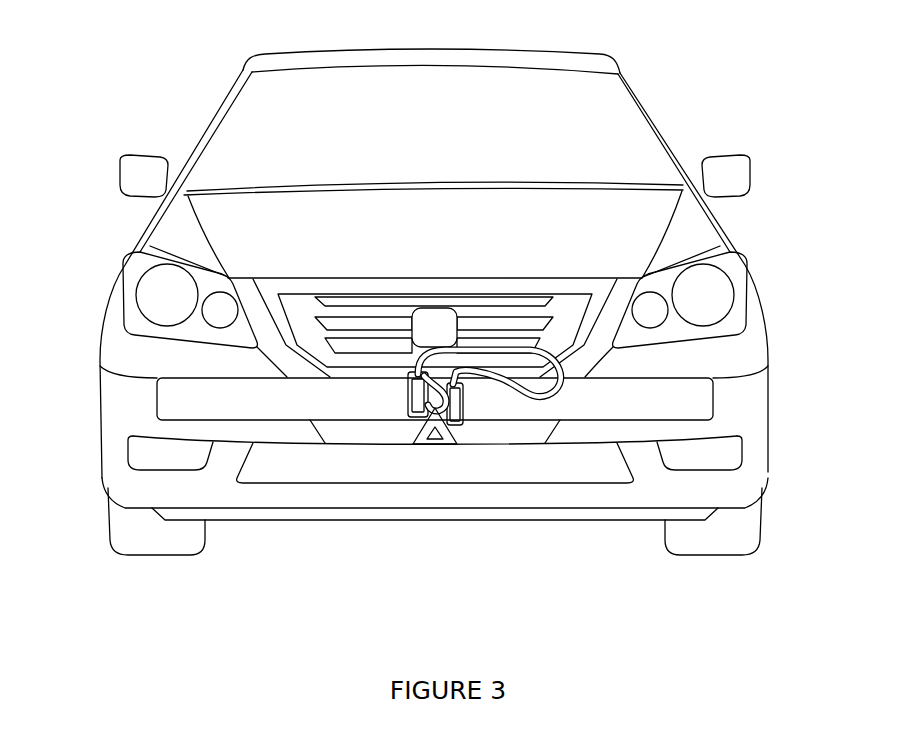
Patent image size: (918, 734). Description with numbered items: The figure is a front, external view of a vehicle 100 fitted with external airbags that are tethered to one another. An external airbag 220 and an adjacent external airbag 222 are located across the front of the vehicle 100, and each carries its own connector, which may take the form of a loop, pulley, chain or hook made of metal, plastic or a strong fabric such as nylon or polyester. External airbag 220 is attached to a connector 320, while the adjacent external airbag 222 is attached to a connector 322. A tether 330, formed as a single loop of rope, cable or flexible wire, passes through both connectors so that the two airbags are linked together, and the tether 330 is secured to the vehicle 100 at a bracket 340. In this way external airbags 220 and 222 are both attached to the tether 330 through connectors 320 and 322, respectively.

The vehicle 100 is at (116, 488).
The external airbag 220 is at (438, 443).
The adjacent external airbag 222 is at (157, 411).
The connector 320 is at (464, 424).
The connector 322 is at (409, 372).
The tether 330 is at (500, 350).
The bracket 340 is at (417, 432).